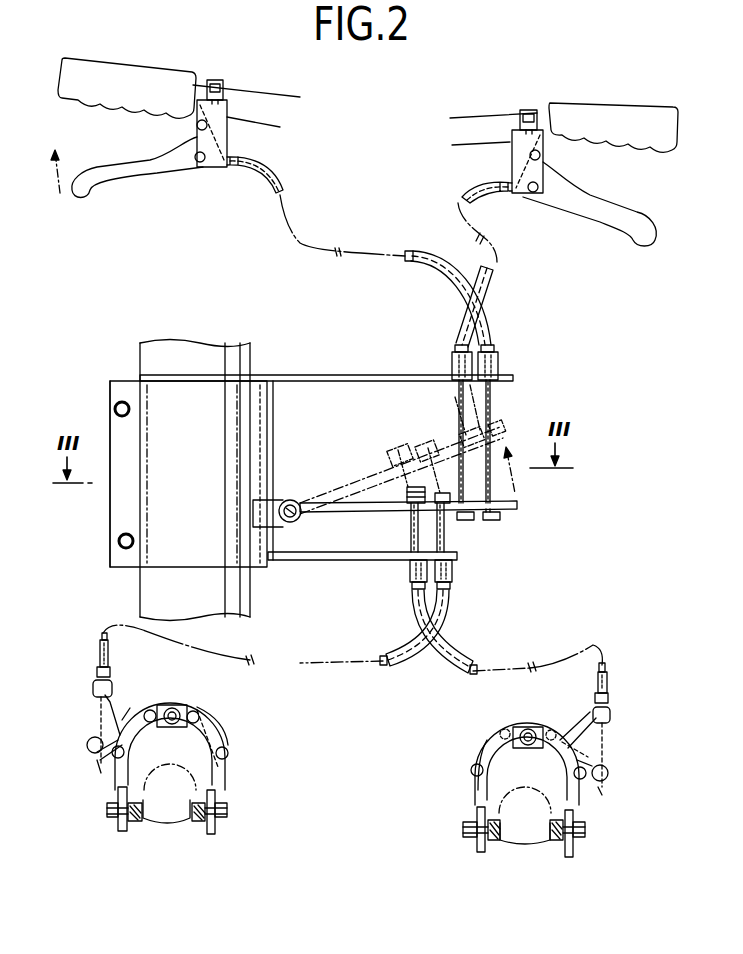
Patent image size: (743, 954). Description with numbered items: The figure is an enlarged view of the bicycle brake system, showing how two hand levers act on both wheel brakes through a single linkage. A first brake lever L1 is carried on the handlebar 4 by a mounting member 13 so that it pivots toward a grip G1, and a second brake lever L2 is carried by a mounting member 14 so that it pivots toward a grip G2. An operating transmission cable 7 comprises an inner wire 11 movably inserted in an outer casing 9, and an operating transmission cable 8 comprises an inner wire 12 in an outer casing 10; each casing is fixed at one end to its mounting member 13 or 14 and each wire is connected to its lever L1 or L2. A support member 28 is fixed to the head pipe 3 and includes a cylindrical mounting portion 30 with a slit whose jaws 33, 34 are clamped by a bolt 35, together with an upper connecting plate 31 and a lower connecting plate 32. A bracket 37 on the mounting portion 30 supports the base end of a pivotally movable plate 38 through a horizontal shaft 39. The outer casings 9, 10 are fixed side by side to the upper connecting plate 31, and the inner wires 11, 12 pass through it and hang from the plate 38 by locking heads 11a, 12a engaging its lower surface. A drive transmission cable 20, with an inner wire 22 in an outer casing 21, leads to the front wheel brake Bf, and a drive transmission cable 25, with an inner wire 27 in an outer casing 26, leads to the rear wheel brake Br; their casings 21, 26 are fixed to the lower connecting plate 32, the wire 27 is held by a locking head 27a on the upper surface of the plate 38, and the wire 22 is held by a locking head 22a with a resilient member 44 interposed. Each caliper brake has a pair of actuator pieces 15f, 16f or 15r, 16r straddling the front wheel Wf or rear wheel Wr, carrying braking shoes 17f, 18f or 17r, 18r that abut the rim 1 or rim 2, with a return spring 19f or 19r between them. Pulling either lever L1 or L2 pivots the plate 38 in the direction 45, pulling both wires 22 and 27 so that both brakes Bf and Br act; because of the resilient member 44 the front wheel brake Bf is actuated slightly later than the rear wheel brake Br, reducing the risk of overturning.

The grip G1 is at (165, 77).
The grip G2 is at (648, 113).
The handlebar 4 is at (252, 97).
The mounting member 13 is at (220, 127).
The mounting member 14 is at (517, 153).
The first brake lever L1 is at (132, 167).
The second brake lever L2 is at (603, 207).
The operating transmission cable 7 is at (389, 280).
The outer casing 9 is at (437, 252).
The inner wire 11 is at (407, 252).
The operating transmission cable 8 is at (502, 291).
The outer casing 10 is at (483, 280).
The inner wire 12 is at (497, 267).
The head pipe 3 is at (252, 358).
The mounting portion 30 is at (159, 460).
The upper connecting plate 31 is at (345, 378).
The lower connecting plate 32 is at (327, 560).
The jaw 33 is at (84, 474).
The jaw 34 is at (117, 392).
The bolt 35 is at (128, 410).
The support member 28 is at (273, 570).
The bracket 37 is at (292, 500).
The pivotally movable plate 38 is at (353, 510).
The horizontal shaft 39 is at (253, 512).
The locking head 22a is at (393, 490).
The resilient member 44 is at (403, 502).
The direction 45 is at (511, 463).
The locking head 27a is at (461, 520).
The locking head 12a is at (474, 523).
The locking head 11a is at (497, 520).
The rear wheel brake Br is at (156, 747).
The drive transmission cable 25 is at (67, 692).
The outer casing 26 is at (88, 706).
The inner wire 27 is at (102, 635).
The actuator piece 15r is at (138, 707).
The actuator piece 16r is at (220, 723).
The return spring 19r is at (205, 713).
The braking shoe 17r is at (133, 823).
The braking shoe 18r is at (197, 823).
The rim 2 is at (150, 822).
The rear wheel Wr is at (171, 826).
The front wheel brake Bf is at (552, 752).
The drive transmission cable 20 is at (634, 710).
The outer casing 21 is at (607, 680).
The inner wire 22 is at (604, 662).
The actuator piece 15f is at (580, 800).
The actuator piece 16f is at (478, 753).
The return spring 19f is at (565, 743).
The braking shoe 17f is at (555, 843).
The braking shoe 18f is at (493, 840).
The rim 1 is at (540, 840).
The front wheel Wf is at (503, 777).